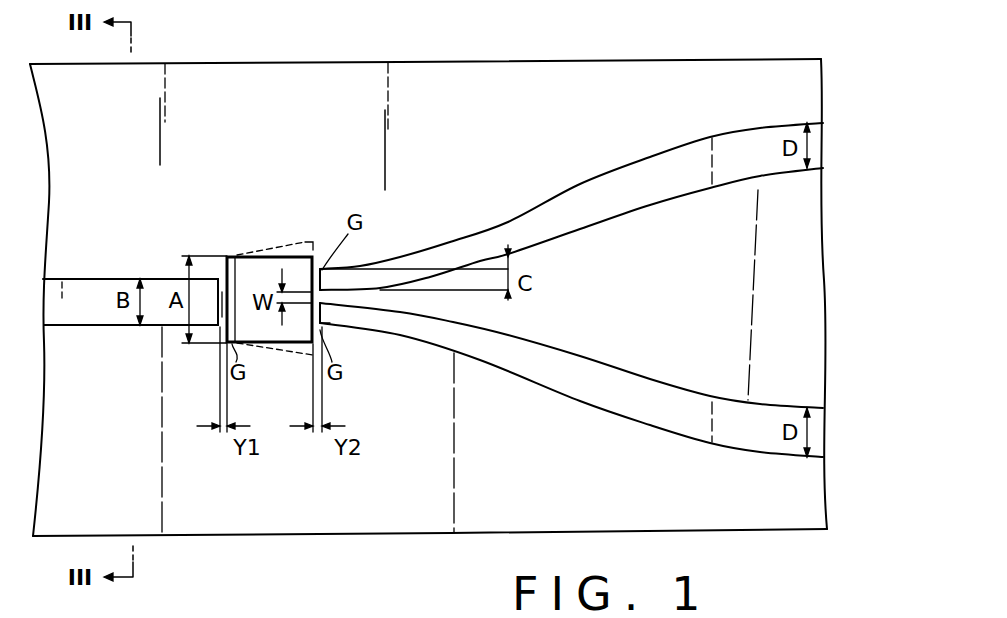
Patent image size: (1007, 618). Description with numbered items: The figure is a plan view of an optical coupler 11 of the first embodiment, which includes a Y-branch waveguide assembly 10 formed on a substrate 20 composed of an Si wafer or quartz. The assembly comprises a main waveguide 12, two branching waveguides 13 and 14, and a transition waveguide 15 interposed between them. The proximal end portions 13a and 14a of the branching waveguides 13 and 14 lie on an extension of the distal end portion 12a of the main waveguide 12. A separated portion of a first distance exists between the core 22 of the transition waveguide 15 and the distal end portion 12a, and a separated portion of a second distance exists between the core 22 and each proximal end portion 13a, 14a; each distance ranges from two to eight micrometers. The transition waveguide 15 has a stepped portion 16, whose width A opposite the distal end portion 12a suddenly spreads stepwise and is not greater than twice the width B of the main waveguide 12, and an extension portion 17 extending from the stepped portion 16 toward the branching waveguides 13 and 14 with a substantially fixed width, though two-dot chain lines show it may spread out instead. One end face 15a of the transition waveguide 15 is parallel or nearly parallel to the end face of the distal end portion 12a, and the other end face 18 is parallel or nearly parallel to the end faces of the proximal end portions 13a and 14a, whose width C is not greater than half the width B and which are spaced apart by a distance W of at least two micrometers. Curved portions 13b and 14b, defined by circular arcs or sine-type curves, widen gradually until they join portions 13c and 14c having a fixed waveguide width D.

The Y-branch waveguide assembly 10 is at (484, 148).
The optical coupler 11 is at (464, 60).
The main waveguide 12 is at (94, 327).
The distal end portion 12a is at (220, 288).
The branching waveguide 13 is at (650, 158).
The proximal end portion 13a is at (338, 270).
The curved portion 13b is at (556, 200).
The portion having fixed waveguide width 13c is at (760, 129).
The branching waveguide 14 is at (627, 419).
The proximal end portion 14a is at (338, 325).
The curved portion 14b is at (531, 385).
The portion having fixed waveguide width 14c is at (770, 453).
The transition waveguide 15 is at (241, 252).
The end face 15a is at (222, 320).
The stepped portion 16 is at (235, 268).
The extension portion 17 is at (282, 250).
The end face 18 is at (315, 260).
The substrate 20 is at (238, 86).
The core 22 is at (90, 279).